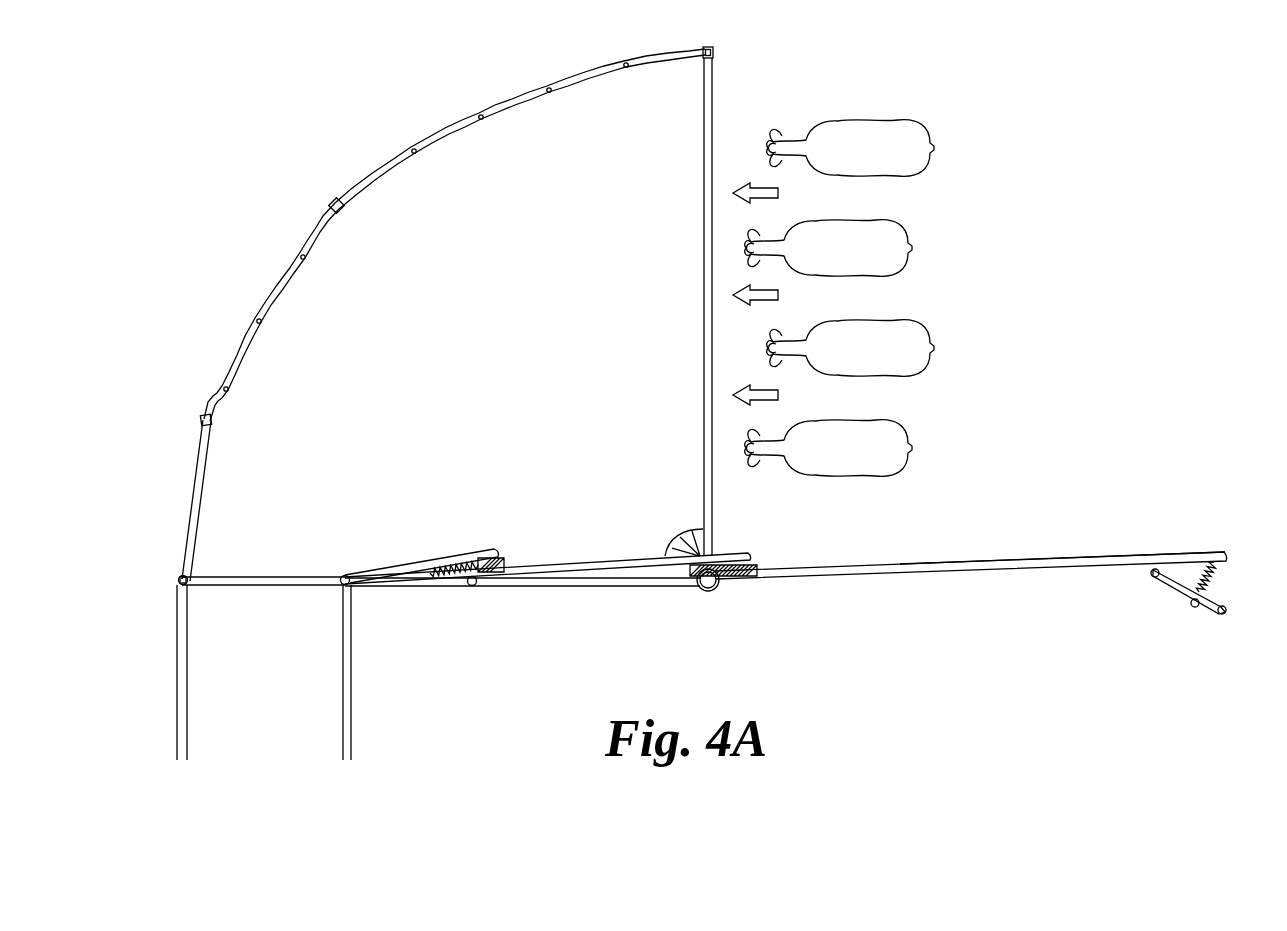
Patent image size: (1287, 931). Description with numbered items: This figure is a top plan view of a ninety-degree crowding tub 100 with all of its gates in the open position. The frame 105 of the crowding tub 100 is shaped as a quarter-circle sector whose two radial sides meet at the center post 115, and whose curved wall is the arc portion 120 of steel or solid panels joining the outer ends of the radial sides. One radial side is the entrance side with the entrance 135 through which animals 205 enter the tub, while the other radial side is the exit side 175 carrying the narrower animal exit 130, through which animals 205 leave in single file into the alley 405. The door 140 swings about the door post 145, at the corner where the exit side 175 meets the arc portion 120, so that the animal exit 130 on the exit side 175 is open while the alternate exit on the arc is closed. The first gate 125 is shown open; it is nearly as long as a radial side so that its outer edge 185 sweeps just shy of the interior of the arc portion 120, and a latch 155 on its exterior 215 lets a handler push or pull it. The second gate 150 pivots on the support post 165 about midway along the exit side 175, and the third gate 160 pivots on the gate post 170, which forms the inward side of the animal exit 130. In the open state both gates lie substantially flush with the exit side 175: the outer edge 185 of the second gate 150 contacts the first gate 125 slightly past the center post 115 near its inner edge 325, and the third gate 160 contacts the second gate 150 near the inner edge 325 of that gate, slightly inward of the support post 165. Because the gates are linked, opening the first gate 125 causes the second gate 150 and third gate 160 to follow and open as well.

The crowding tub 100 is at (282, 128).
The frame 105 is at (712, 93).
The center post 115 is at (712, 584).
The arc portion 120 is at (426, 130).
The first gate 125 is at (957, 573).
The animal exit 130 is at (266, 548).
The entrance 135 is at (735, 215).
The door 140 is at (195, 492).
The door post 145 is at (178, 578).
The second gate 150 is at (612, 565).
The latch 155 is at (1210, 613).
The third gate 160 is at (410, 566).
The support post 165 is at (474, 590).
The gate post 170 is at (348, 590).
The exit side 175 is at (552, 612).
The outer edge 185 is at (492, 558).
The animals 205 is at (839, 298).
The exterior 215 is at (1078, 573).
The inner edge 325 is at (508, 562).
The alley 405 is at (348, 676).